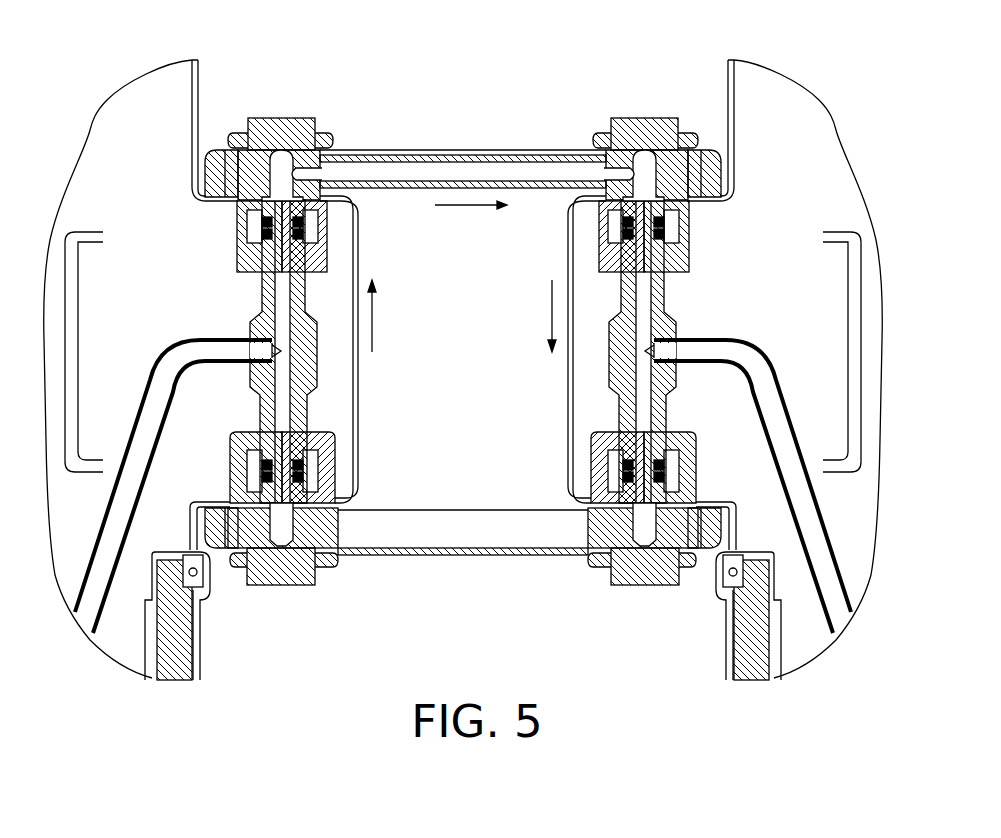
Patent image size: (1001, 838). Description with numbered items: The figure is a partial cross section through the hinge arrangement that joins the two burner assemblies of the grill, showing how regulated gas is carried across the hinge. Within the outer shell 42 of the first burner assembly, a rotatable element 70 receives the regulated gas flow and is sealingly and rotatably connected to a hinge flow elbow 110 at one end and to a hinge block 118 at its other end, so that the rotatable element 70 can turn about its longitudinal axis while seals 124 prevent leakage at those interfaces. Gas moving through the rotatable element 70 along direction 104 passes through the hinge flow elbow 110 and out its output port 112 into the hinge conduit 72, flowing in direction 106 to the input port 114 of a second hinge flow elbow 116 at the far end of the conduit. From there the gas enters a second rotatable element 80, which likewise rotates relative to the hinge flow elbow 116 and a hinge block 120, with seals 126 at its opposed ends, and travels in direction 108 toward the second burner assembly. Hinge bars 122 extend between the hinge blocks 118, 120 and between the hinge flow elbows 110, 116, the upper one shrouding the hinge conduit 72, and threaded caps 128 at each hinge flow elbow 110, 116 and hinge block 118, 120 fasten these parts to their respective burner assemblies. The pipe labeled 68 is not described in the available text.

The outer shell 42 is at (199, 80).
The first conduit 68 is at (195, 337).
The rotatable element 70 is at (258, 313).
The hinge conduit 72 is at (766, 357).
The rotatable element 80 is at (678, 330).
The direction 104 is at (372, 316).
The direction 106 is at (464, 205).
The direction 108 is at (552, 310).
The hinge flow elbow 110 is at (279, 118).
The output port 112 is at (328, 170).
The input port 114 is at (605, 172).
The hinge flow elbow 116 is at (661, 118).
The hinge block 118 is at (290, 588).
The hinge block 120 is at (643, 587).
The hinge bar 122 is at (488, 150).
The seals 124 is at (312, 224).
The seals 126 is at (688, 227).
The threaded caps 128 is at (238, 230).